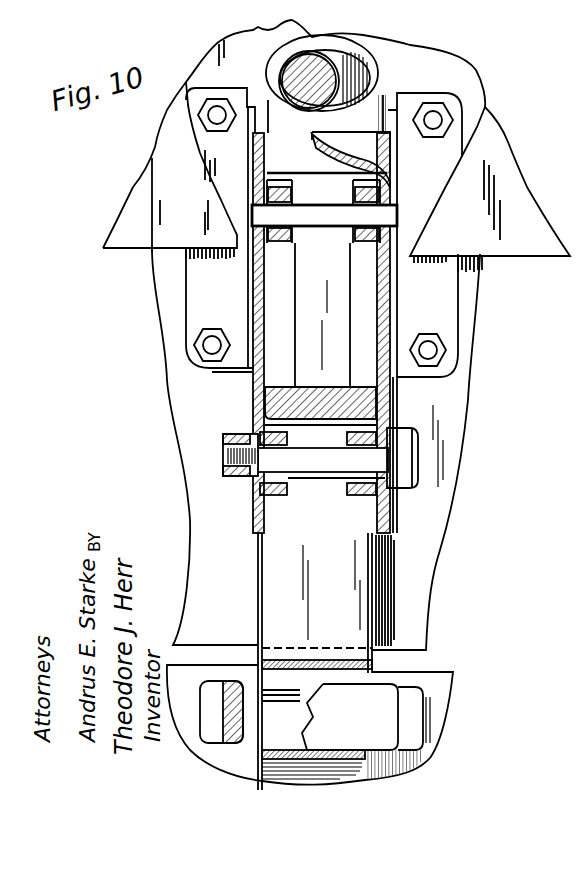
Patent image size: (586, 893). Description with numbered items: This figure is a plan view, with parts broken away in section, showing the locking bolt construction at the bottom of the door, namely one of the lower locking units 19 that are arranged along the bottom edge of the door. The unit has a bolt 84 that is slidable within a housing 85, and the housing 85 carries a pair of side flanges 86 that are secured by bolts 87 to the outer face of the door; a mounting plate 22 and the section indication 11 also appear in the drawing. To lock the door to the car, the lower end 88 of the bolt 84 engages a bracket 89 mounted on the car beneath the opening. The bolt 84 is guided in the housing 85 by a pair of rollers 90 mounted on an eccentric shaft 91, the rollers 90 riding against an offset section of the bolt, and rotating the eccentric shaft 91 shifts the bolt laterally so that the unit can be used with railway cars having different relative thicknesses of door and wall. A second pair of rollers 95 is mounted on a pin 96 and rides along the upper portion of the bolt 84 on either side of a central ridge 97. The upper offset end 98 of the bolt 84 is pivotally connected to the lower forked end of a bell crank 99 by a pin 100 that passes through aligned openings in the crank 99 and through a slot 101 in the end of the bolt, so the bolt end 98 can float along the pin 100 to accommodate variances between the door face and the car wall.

The section line 11- 11 is at (327, 45).
The lower locking unit 19 is at (148, 282).
The mounting plate 22 is at (120, 241).
The bolt 84 is at (268, 581).
The housing 85 is at (252, 280).
The side flange 86 is at (223, 176).
The bolt 87 is at (216, 109).
The lower end 88 is at (271, 751).
The bracket 89 is at (327, 697).
The roller 90 is at (287, 437).
The eccentric shaft 91 is at (341, 463).
The roller 95 is at (360, 240).
The pin 96 is at (383, 215).
The central ridge 97 is at (333, 323).
The upper offset end 98 is at (280, 146).
The bell crank 99 is at (280, 32).
The pin 100 is at (308, 90).
The slot 101 is at (363, 78).